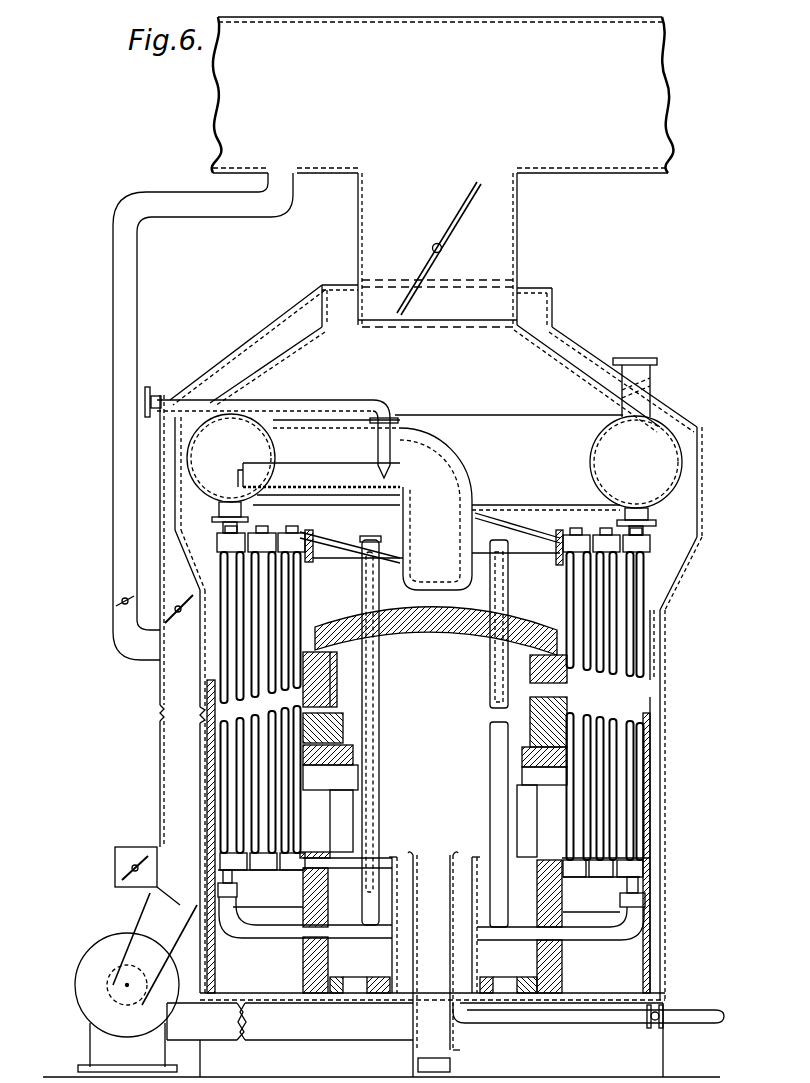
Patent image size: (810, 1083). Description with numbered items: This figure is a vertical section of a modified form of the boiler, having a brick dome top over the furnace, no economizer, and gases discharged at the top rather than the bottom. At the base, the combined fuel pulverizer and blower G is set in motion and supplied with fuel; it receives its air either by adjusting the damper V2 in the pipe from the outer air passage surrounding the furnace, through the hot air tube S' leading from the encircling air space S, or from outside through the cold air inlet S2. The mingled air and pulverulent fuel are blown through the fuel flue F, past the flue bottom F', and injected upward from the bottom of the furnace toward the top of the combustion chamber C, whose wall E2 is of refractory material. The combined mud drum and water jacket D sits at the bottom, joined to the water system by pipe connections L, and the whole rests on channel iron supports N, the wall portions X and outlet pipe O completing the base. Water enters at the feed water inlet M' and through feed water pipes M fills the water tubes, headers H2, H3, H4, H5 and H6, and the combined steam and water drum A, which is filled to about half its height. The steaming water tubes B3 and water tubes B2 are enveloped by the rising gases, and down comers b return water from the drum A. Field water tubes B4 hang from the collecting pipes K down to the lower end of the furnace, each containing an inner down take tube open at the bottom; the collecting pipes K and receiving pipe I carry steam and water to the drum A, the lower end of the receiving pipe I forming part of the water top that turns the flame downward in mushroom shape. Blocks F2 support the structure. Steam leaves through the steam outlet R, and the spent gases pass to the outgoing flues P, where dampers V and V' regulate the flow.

The outgoing flue P is at (230, 543).
The damper V is at (439, 248).
The feed water inlet M' is at (169, 386).
The feed water pipe M is at (255, 416).
The steam outlet R is at (635, 377).
The encircling air space S is at (392, 696).
The steam and water drum A is at (434, 461).
The receiving pipe I is at (430, 486).
The down comer b is at (219, 507).
The header H2 is at (228, 543).
The header H3 is at (266, 553).
The collecting pipe K is at (430, 509).
The hot air tube S' is at (166, 577).
The damper V' is at (94, 598).
The damper V2 is at (178, 610).
The water tube B2 is at (300, 622).
The steaming water tube B3 is at (300, 638).
The combustion chamber C is at (436, 673).
The support block F2 is at (338, 690).
The furnace wall E2 is at (557, 713).
The Field water tube B4 is at (372, 745).
The header H4 is at (228, 856).
The header H6 is at (293, 858).
The cold air inlet S2 is at (121, 867).
The channel iron support N is at (686, 875).
The pipe connection L is at (240, 925).
The header H5 is at (263, 868).
The wall X is at (432, 926).
The combined mud drum and water jacket D is at (434, 925).
The fuel flue F is at (381, 964).
The flue bottom F' is at (463, 1060).
The combined fuel pulverizer and blower G is at (136, 979).
The outlet pipe O is at (599, 1015).